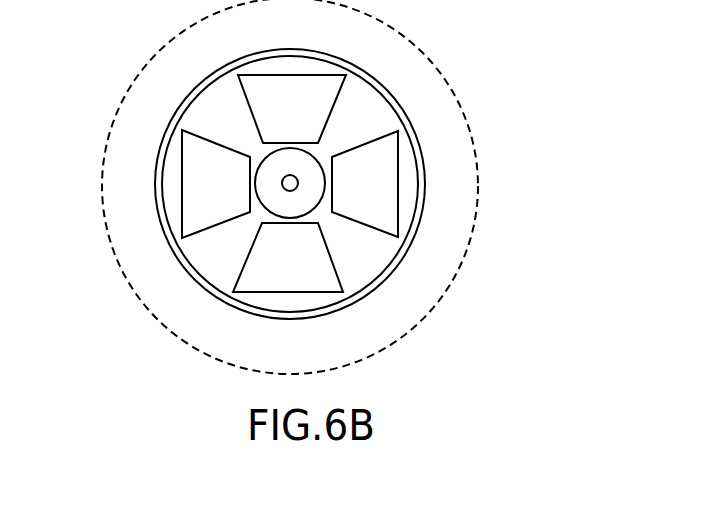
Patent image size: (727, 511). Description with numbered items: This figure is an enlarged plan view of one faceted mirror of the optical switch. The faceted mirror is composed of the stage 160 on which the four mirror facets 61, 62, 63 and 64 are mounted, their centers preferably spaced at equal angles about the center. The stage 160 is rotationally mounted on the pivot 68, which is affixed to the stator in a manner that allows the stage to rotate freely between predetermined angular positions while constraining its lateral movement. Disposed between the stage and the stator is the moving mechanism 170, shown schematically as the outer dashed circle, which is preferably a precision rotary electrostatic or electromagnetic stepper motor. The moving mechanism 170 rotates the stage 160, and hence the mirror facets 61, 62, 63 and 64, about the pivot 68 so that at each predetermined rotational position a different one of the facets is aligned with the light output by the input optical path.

The mirror facet 61 is at (227, 196).
The mirror facet 62 is at (298, 266).
The mirror facet 63 is at (378, 193).
The mirror facet 64 is at (303, 118).
The pivot 68 is at (296, 177).
The stage 160 is at (458, 207).
The moving mechanism 170 is at (477, 212).